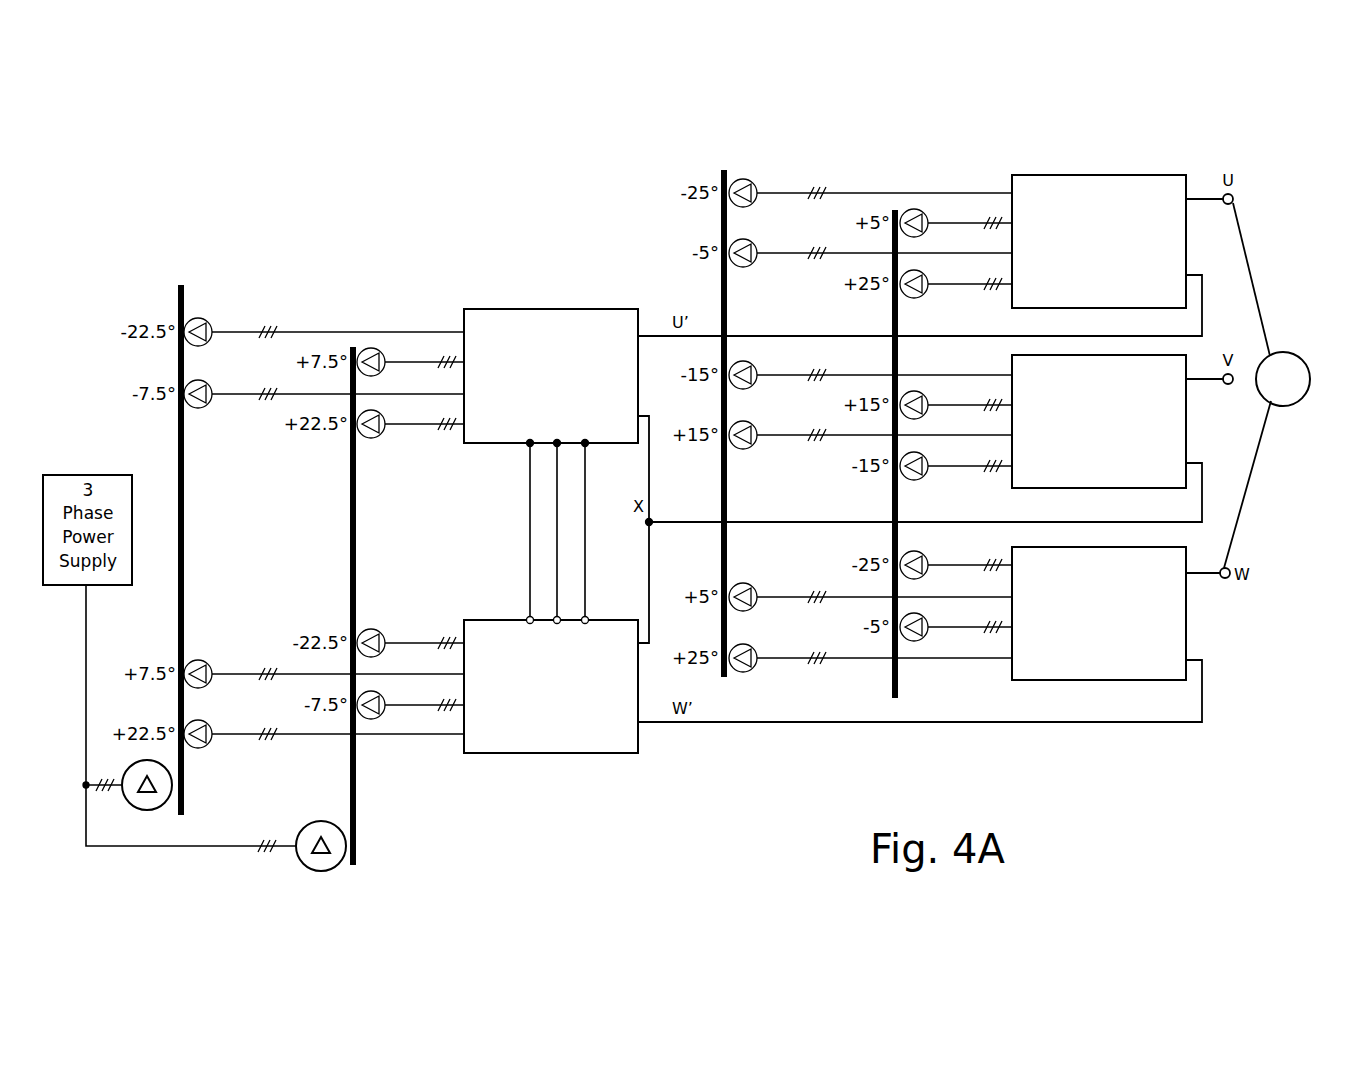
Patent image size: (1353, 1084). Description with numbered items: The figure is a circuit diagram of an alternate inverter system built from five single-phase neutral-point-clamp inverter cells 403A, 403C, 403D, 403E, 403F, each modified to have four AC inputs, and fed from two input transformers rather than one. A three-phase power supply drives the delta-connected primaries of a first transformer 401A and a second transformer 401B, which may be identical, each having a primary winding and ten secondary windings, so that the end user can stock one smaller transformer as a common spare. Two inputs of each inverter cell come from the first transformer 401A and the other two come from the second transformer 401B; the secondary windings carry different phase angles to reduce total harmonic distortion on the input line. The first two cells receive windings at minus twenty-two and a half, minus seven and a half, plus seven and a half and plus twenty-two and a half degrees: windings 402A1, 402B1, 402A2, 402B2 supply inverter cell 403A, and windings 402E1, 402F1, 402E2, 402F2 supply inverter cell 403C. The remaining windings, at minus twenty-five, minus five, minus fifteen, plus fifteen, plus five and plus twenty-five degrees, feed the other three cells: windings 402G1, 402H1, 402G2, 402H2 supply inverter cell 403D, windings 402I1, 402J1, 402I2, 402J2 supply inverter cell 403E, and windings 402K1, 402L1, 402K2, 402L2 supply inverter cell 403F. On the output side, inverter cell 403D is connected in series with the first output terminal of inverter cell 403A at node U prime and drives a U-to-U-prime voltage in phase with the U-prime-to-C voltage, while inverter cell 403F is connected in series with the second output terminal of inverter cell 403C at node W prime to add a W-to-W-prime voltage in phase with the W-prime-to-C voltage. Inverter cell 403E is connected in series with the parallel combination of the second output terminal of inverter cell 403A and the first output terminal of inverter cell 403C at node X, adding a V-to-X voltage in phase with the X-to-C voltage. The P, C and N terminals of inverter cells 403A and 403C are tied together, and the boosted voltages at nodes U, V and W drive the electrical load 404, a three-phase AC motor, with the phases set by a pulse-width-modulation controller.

The first transformer 401A is at (190, 283).
The second transformer 401B is at (890, 692).
The secondary winding 402A1 is at (324, 327).
The secondary winding 402A2 is at (410, 357).
The secondary winding 402B1 is at (324, 389).
The secondary winding 402B2 is at (410, 419).
The secondary winding 402E1 is at (410, 638).
The secondary winding 402E2 is at (324, 669).
The secondary winding 402F1 is at (410, 700).
The secondary winding 402F2 is at (324, 729).
The secondary winding 402G1 is at (870, 188).
The secondary winding 402G2 is at (956, 218).
The secondary winding 402H1 is at (870, 248).
The secondary winding 402H2 is at (956, 279).
The secondary winding 402I1 is at (870, 370).
The secondary winding 402I2 is at (956, 400).
The secondary winding 402J1 is at (870, 430).
The secondary winding 402J2 is at (956, 461).
The secondary winding 402K1 is at (956, 560).
The secondary winding 402K2 is at (870, 592).
The secondary winding 402L1 is at (956, 622).
The secondary winding 402L2 is at (870, 653).
The inverter cell 403A is at (551, 376).
The inverter cell 403C is at (551, 686).
The inverter cell 403D is at (1099, 241).
The inverter cell 403E is at (1099, 421).
The inverter cell 403F is at (1099, 613).
The electrical load 404 is at (1289, 353).